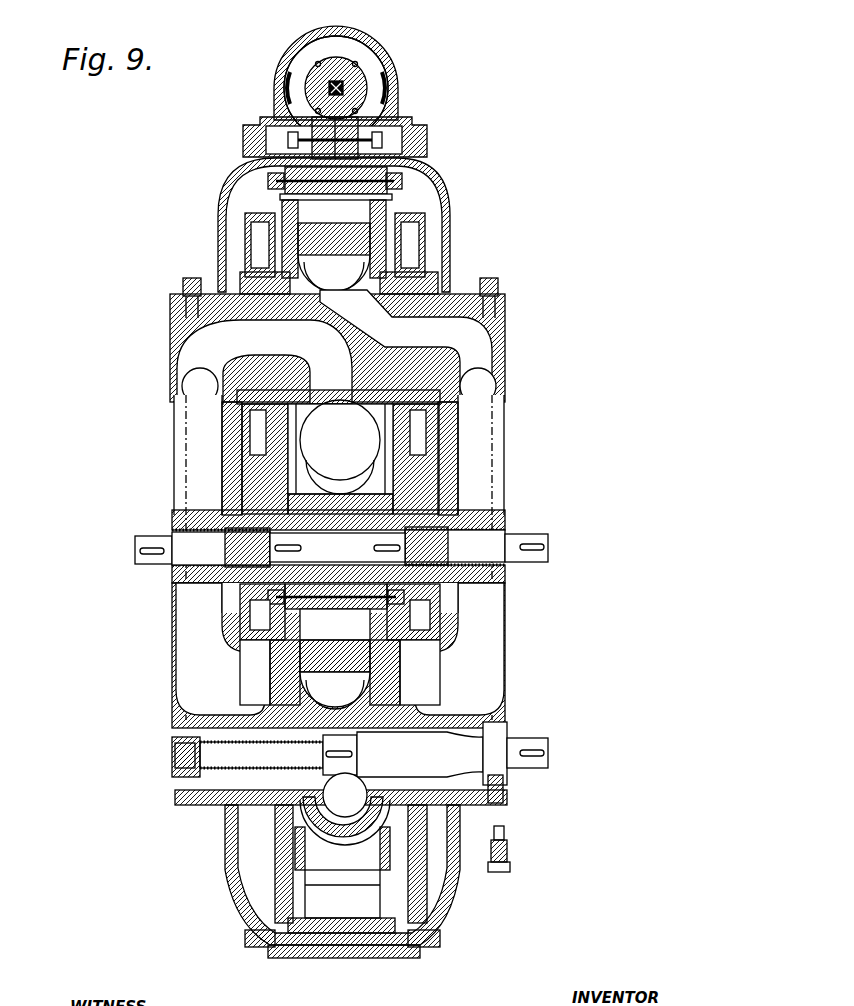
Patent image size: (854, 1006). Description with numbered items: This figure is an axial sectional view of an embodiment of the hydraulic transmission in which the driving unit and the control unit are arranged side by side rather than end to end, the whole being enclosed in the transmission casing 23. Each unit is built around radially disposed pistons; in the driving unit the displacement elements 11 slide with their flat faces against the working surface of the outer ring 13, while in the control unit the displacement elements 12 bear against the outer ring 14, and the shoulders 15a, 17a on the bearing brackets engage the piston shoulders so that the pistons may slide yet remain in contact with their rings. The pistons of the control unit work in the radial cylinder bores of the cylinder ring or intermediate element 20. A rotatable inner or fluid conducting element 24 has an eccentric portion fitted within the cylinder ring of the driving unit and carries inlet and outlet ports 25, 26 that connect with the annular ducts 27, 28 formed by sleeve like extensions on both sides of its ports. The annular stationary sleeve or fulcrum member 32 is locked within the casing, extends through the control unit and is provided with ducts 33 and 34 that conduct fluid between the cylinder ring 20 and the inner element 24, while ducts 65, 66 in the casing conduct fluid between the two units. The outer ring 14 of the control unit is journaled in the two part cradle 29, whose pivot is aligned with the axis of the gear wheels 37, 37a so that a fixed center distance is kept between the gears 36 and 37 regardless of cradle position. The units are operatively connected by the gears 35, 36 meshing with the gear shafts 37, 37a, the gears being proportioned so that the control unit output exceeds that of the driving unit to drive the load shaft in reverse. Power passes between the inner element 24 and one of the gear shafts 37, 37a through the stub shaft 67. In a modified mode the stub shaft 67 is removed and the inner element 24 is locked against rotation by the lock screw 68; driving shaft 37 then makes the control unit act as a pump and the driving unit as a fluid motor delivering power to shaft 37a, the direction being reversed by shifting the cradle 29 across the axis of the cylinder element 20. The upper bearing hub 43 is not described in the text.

The shaft bearing hub 43 is at (352, 82).
The cradle 29 is at (420, 165).
The annular outer element or ring 14 is at (318, 186).
The displacement element 12 is at (349, 232).
The shoulder 17a is at (410, 212).
The second outer element or ring (intermediate element) 20 is at (372, 238).
The duct 34 is at (252, 343).
The duct 33 is at (438, 330).
The stationary element (sleeve / fulcrum member) 32 is at (500, 330).
The gear wheel 36 is at (330, 457).
The duct 65 is at (200, 490).
The duct 66 is at (480, 460).
The gear wheel / gear shaft 37 is at (168, 553).
The gear wheel / gear shaft 37a is at (480, 538).
The stub shaft 67 is at (362, 548).
The gear wheel 35 is at (420, 618).
The shoulder 15a is at (440, 637).
The displacement element 11 is at (334, 660).
The inlet/outlet port 25 is at (344, 708).
The transmission casing 23 is at (500, 683).
The annular duct 28 is at (277, 728).
The annular duct 27 is at (418, 728).
The inner or fluid conducting element 24 is at (498, 750).
The inlet/outlet port 26 is at (345, 800).
The lock screw 68 is at (508, 848).
The annular outer element or ring 13 is at (340, 918).